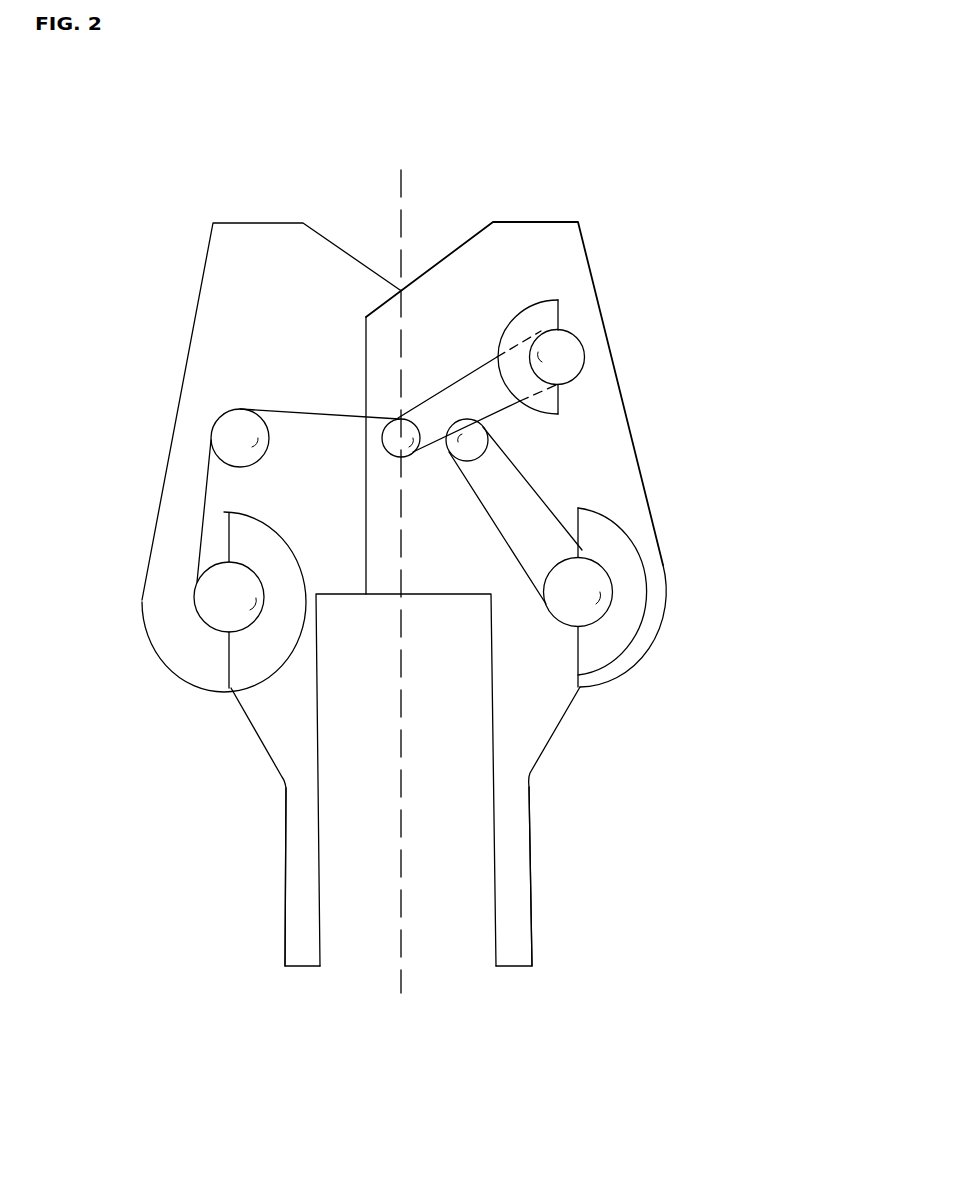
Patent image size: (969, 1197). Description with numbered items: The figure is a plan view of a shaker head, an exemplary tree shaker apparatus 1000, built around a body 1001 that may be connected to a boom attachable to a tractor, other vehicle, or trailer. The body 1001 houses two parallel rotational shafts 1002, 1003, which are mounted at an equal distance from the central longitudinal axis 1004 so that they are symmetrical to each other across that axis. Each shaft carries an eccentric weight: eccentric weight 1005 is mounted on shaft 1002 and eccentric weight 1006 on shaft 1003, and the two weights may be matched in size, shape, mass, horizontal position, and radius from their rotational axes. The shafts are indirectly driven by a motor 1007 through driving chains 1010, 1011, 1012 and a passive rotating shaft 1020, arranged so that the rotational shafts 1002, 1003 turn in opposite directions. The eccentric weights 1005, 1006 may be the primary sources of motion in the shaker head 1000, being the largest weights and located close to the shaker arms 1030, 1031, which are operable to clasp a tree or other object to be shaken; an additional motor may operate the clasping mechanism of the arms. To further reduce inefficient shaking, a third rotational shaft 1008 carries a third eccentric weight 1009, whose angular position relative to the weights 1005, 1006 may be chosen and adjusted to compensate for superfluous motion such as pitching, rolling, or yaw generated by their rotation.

The tree shaker apparatus 1000 is at (178, 218).
The body 1001 is at (203, 337).
The rotational shaft 1002 is at (208, 607).
The rotational shaft 1003 is at (580, 614).
The central longitudinal axis 1004 is at (392, 180).
The eccentric weight 1005 is at (248, 660).
The eccentric weight 1006 is at (641, 617).
The motor 1007 is at (211, 428).
The third rotational shaft 1008 is at (565, 361).
The third eccentric weight 1009 is at (542, 322).
The driving chain 1010 is at (200, 507).
The driving chain 1011 is at (462, 377).
The driving chain 1012 is at (545, 488).
The passive rotating shaft 1020 is at (395, 430).
The shaker arm 1030 is at (297, 888).
The shaker arm 1031 is at (522, 903).